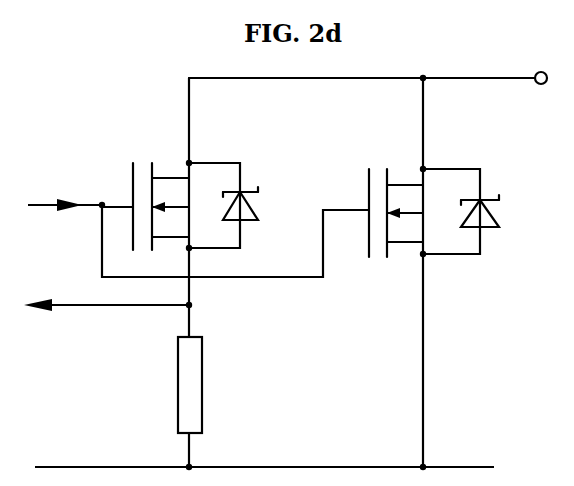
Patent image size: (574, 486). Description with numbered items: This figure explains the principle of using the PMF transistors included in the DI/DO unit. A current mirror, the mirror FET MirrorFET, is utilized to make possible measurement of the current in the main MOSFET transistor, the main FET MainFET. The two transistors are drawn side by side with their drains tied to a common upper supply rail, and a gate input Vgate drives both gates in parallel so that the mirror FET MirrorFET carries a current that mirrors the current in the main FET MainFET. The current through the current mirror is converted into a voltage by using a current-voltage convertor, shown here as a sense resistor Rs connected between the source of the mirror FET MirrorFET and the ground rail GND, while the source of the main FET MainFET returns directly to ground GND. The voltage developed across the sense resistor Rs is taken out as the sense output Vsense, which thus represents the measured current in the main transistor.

The mirror FET MirrorFET is at (183, 178).
The main FET MainFET is at (460, 166).
The gate voltage input Vgate is at (63, 192).
The sense voltage output Vsense is at (108, 318).
The sense resistor Rs is at (207, 385).
The ground rail GND is at (264, 453).